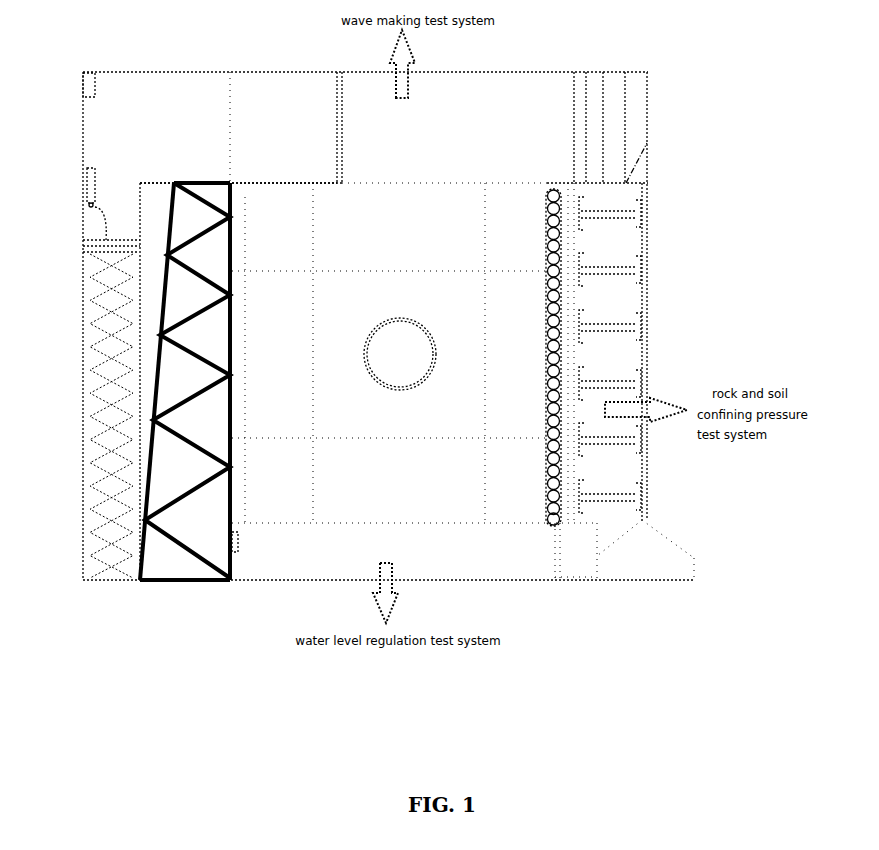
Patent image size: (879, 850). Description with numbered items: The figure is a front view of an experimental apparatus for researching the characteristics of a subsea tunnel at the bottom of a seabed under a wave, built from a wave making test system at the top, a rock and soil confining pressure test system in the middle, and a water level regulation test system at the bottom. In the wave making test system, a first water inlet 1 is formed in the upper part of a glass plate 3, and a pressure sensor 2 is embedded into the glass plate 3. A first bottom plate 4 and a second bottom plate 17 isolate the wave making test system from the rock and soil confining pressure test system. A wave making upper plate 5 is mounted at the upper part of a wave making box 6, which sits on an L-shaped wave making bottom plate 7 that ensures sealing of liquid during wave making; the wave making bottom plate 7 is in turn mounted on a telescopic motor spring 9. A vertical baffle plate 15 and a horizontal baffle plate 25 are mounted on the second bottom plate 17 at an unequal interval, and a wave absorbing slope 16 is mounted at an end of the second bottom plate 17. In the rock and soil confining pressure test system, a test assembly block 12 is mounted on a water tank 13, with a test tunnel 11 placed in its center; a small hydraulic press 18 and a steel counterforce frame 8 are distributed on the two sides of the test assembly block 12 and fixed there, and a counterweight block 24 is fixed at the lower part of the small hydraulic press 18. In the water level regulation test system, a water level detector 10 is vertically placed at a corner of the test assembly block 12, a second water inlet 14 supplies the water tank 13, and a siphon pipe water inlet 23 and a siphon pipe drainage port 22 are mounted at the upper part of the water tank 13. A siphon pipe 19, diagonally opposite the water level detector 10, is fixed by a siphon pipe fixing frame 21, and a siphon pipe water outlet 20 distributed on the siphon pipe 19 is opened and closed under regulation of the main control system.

The first water inlet 1 is at (92, 85).
The pressure sensor 2 is at (230, 113).
The glass plate 3 is at (270, 157).
The first bottom plate 4 is at (170, 185).
The wave making upper plate 5 is at (87, 186).
The wave making box 6 is at (98, 225).
The wave making bottom plate 7 is at (130, 245).
The steel counterforce frame 8 is at (173, 290).
The telescopic motor spring 9 is at (140, 328).
The water level detector 10 is at (243, 362).
The test tunnel 11 is at (383, 367).
The test assembly block 12 is at (332, 418).
The water tank 13 is at (268, 528).
The second water inlet 14 is at (232, 542).
The vertical baffle plate 15 is at (575, 110).
The horizontal baffle plate 25 is at (587, 132).
The wave absorbing slope 16 is at (638, 170).
The second bottom plate 17 is at (627, 183).
The small hydraulic press 18 is at (615, 213).
The siphon pipe 19 is at (560, 252).
The siphon pipe water outlet 20 is at (580, 282).
The siphon pipe fixing frame 21 is at (560, 308).
The siphon pipe drainage port 22 is at (563, 522).
The siphon pipe water inlet 23 is at (560, 558).
The counterweight block 24 is at (658, 568).